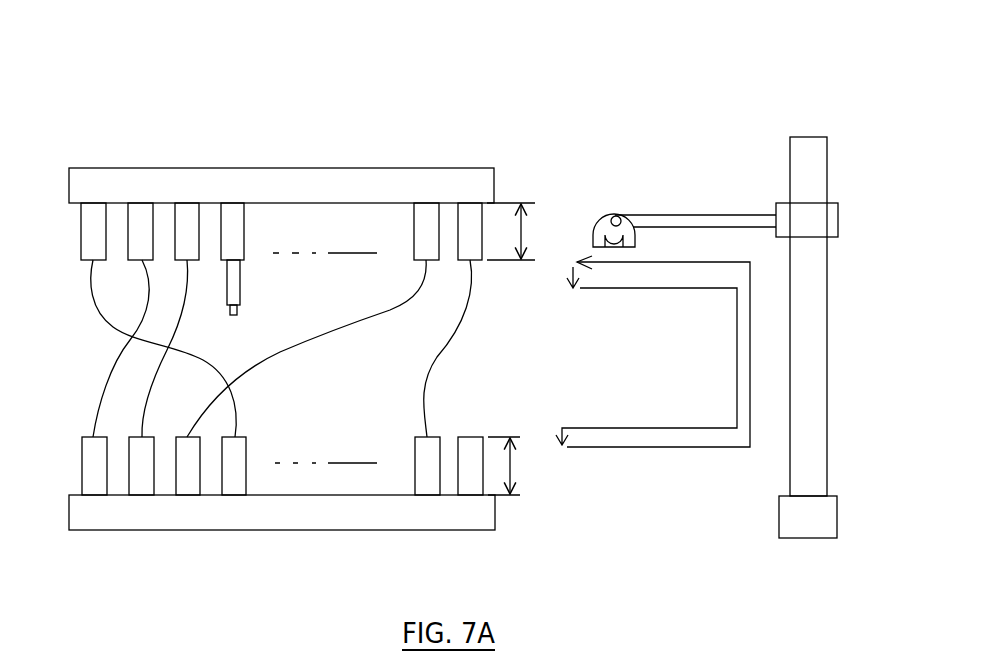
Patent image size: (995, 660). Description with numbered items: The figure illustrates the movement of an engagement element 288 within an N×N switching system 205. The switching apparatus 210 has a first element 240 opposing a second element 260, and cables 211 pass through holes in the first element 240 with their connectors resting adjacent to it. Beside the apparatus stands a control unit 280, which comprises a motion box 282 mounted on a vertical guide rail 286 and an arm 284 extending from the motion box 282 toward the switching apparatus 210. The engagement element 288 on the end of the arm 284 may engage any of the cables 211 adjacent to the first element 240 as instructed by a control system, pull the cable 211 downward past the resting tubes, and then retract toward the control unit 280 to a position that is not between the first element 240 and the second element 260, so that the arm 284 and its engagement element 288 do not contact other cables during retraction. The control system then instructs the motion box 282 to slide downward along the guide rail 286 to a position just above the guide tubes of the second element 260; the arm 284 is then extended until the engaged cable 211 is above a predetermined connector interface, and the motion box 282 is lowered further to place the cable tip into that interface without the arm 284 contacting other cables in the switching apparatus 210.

The N×N switching system 205 is at (548, 102).
The switching apparatus 210 is at (258, 150).
The cable 211 is at (237, 293).
The first element 240 is at (383, 169).
The second element 260 is at (444, 532).
The control unit 280 is at (765, 155).
The motion box 282 is at (840, 201).
The arm 284 is at (665, 220).
The guide rail 286 is at (818, 440).
The engagement element 288 is at (597, 249).